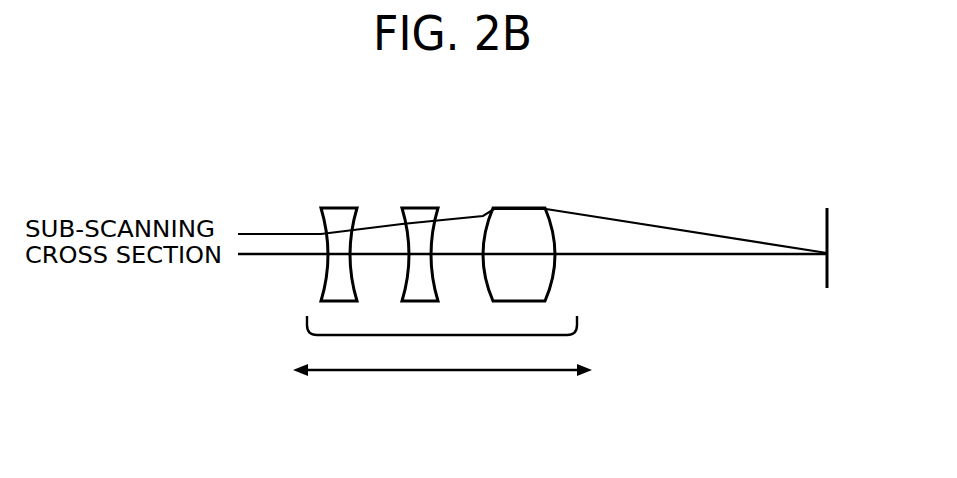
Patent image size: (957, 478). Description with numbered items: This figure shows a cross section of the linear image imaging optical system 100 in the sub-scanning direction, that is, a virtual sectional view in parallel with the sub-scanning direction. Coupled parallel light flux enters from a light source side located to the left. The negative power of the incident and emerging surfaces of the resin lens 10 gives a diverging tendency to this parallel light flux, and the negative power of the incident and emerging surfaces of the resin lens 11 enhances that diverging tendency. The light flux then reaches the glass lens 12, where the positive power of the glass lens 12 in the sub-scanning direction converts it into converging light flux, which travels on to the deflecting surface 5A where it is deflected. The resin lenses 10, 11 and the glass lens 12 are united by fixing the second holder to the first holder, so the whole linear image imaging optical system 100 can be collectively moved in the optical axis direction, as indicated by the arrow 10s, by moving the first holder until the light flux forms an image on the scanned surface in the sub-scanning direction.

The linear image imaging optical system 100 is at (537, 151).
The resin lens 10 is at (340, 208).
The resin lens 11 is at (422, 208).
The glass lens 12 is at (518, 208).
The arrow 10s is at (463, 371).
The deflecting surface 5A is at (829, 265).